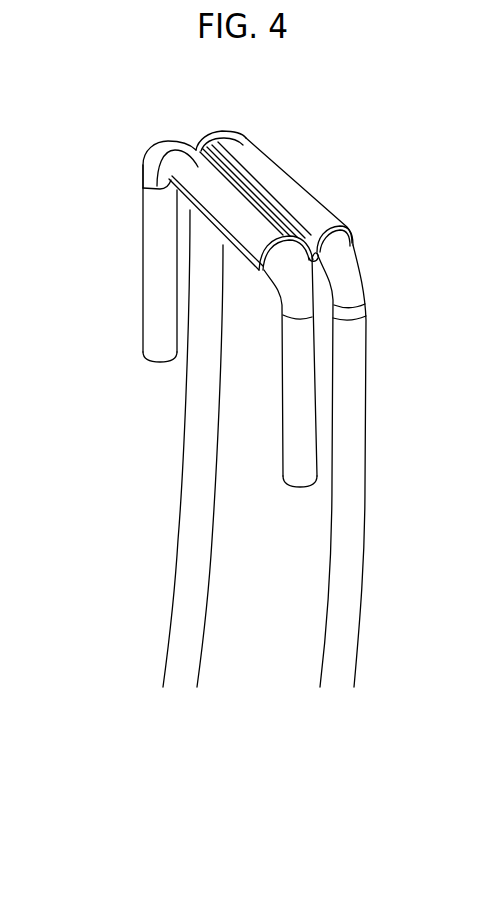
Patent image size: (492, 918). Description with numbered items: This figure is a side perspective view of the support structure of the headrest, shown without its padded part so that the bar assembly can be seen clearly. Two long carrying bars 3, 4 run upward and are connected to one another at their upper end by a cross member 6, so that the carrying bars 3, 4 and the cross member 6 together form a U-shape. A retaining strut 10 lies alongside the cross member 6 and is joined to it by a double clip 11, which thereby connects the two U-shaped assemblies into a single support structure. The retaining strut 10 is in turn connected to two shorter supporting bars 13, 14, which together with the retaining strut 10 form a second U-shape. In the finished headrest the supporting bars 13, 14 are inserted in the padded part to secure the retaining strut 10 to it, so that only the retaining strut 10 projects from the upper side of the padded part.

The carrying bar 3 is at (185, 663).
The carrying bar 4 is at (335, 670).
The cross member 6 is at (337, 247).
The retaining strut 10 is at (292, 265).
The double clip 11 is at (225, 207).
The supporting bar 13 is at (162, 252).
The supporting bar 14 is at (303, 418).